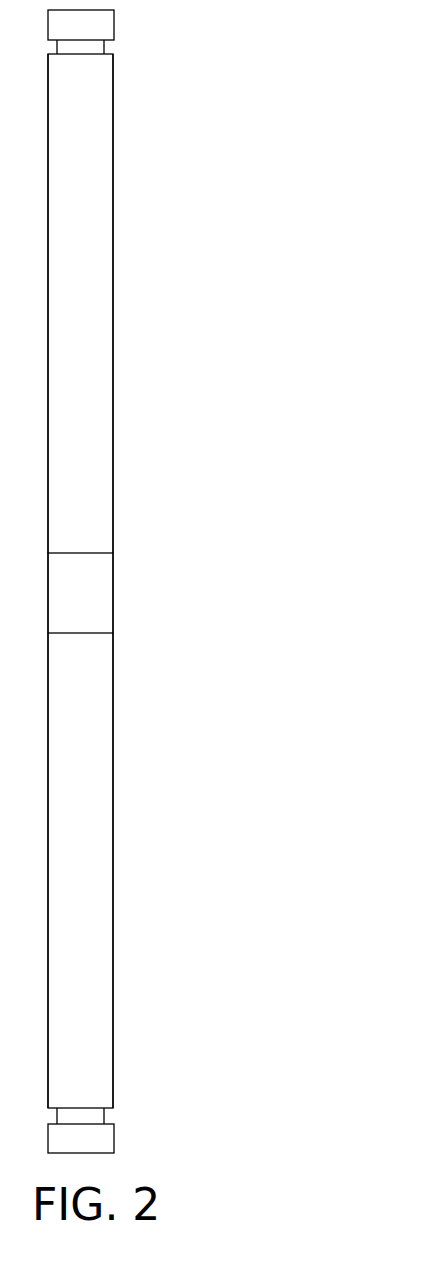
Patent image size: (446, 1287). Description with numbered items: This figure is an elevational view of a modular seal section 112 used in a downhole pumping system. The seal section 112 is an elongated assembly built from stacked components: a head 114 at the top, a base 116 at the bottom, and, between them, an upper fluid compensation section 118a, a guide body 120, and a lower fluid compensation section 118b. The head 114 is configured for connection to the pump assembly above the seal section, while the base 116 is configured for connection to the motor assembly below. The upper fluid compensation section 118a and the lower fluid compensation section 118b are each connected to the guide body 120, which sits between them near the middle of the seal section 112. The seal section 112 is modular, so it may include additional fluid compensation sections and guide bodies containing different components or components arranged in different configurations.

The seal section 112 is at (257, 556).
The head 114 is at (114, 18).
The base 116 is at (114, 1140).
The upper fluid compensation section 118a is at (114, 238).
The lower fluid compensation section 118b is at (114, 960).
The guide body 120 is at (114, 581).